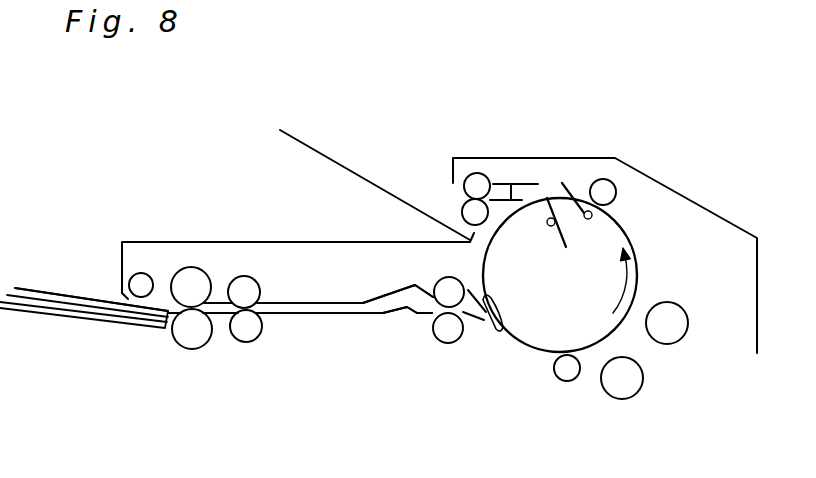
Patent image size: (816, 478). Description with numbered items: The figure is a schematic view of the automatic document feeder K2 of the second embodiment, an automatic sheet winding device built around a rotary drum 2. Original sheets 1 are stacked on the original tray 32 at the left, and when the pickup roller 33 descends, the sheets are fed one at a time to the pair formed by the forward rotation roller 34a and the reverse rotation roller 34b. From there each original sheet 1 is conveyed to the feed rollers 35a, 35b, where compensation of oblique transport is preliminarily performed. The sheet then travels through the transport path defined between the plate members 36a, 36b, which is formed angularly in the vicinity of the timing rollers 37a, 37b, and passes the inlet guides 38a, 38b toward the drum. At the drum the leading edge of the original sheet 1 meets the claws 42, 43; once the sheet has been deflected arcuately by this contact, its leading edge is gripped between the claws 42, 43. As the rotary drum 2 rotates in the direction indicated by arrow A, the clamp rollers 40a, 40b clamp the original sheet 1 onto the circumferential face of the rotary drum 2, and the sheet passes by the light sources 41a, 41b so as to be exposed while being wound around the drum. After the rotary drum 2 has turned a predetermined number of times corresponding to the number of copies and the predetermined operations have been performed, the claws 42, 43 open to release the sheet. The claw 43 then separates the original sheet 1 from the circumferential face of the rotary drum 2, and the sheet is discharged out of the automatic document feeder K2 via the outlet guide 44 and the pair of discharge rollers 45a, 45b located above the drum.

The original sheet 1 is at (27, 288).
The rotary drum 2 is at (627, 232).
The original tray 32 is at (10, 309).
The pickup roller 33 is at (135, 273).
The forward rotation roller 34a is at (192, 267).
The reverse rotation roller 34b is at (182, 345).
The feed roller 35a is at (245, 276).
The feed roller 35b is at (243, 343).
The plate member 36a is at (407, 285).
The plate member 36b is at (407, 307).
The timing roller 37a is at (441, 278).
The timing roller 37b is at (443, 341).
The inlet guide 38a is at (502, 330).
The inlet guide 38b is at (470, 319).
The clamp roller 40a is at (575, 377).
The clamp roller 40b is at (613, 185).
The light source 41a is at (640, 380).
The light source 41b is at (685, 327).
The claw 42 is at (565, 183).
The claw 43 is at (558, 243).
The outlet guide 44 is at (512, 198).
The discharge roller 45a is at (477, 173).
The discharge roller 45b is at (462, 212).
The automatic document feeder K2 is at (587, 89).
The rotation direction A is at (610, 289).